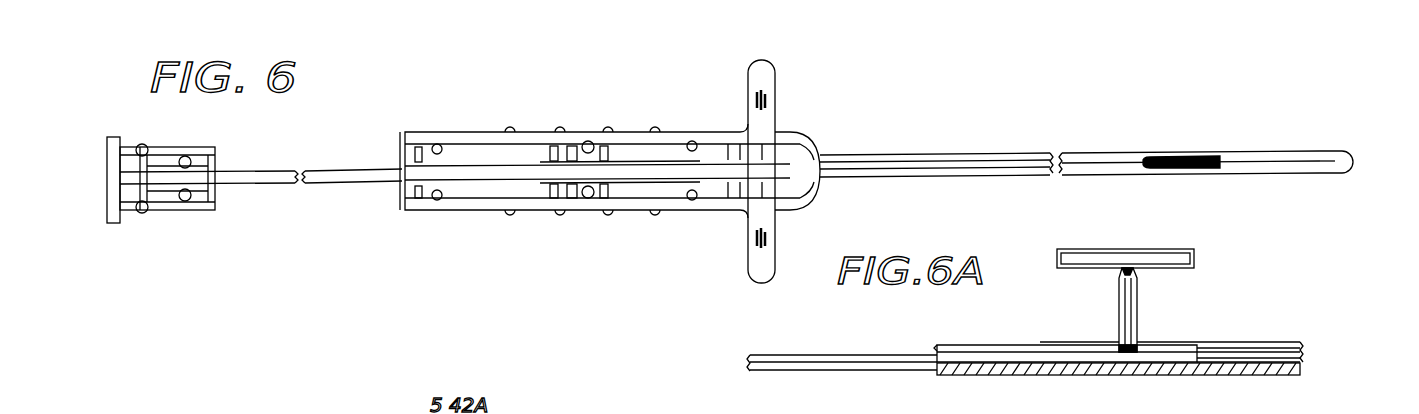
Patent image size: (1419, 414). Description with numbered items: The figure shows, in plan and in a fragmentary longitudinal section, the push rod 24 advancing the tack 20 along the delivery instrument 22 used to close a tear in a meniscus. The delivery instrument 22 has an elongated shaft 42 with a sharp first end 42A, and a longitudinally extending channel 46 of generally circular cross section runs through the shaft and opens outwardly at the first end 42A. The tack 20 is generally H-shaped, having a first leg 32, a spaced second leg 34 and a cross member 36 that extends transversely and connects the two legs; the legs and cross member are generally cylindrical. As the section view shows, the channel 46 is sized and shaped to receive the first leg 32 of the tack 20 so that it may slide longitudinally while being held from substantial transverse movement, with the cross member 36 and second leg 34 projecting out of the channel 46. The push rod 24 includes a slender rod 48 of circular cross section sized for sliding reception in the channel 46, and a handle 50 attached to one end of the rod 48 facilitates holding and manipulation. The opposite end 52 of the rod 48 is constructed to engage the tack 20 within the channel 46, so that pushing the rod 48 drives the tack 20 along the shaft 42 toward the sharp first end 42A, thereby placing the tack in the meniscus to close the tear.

In FIG. 6, the tack 20 is at (1268, 116).
In FIG. 6A, the tack 20 is at (1186, 283).
In FIG. 6, the delivery instrument 22 is at (793, 128).
In FIG. 6, the push rod 24 is at (331, 156).
In FIG. 6A, the first leg 32 is at (1163, 368).
In FIG. 6, the second leg 34 is at (1220, 157).
In FIG. 6A, the second leg 34 is at (1151, 248).
In FIG. 6A, the cross member 36 is at (1120, 308).
In FIG. 6, the elongated shaft 42 is at (948, 152).
In FIG. 6A, the elongated shaft 42 is at (1210, 340).
In FIG. 6, the sharp first end 42A is at (1382, 125).
In FIG. 6, the channel 46 is at (972, 167).
In FIG. 6A, the channel 46 is at (1274, 350).
In FIG. 6, the slender rod 48 is at (360, 166).
In FIG. 6A, the slender rod 48 is at (897, 318).
In FIG. 6, the handle 50 is at (186, 148).
In FIG. 6A, the opposite end 52 is at (1037, 373).